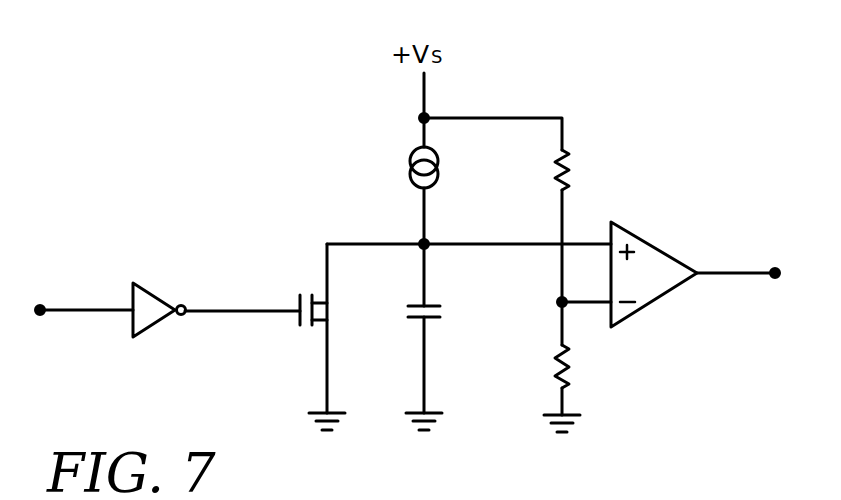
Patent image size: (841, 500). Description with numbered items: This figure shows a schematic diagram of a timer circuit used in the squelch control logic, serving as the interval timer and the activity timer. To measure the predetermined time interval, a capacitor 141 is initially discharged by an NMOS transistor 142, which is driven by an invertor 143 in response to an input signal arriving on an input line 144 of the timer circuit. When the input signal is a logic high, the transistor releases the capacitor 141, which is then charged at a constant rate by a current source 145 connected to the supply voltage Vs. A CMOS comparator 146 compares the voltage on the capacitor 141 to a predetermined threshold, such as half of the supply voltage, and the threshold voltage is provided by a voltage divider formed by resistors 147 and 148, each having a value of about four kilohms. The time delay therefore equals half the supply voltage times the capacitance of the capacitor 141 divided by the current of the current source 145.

The capacitor 141 is at (435, 318).
The NMOS transistor 142 is at (300, 325).
The invertor 143 is at (158, 295).
The input line 144 is at (79, 308).
The current source 145 is at (414, 150).
The CMOS comparator 146 is at (655, 243).
The resistor 147 is at (565, 162).
The resistor 148 is at (567, 357).